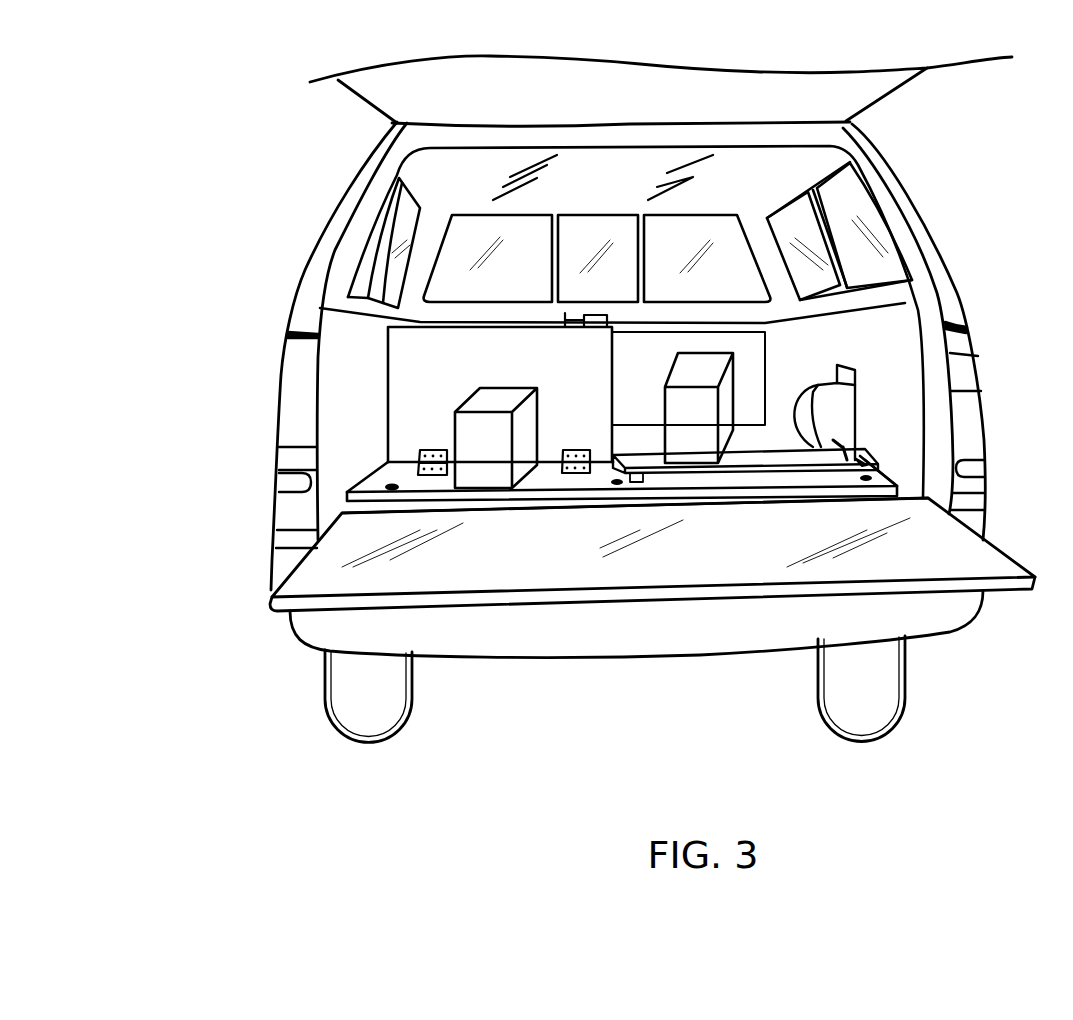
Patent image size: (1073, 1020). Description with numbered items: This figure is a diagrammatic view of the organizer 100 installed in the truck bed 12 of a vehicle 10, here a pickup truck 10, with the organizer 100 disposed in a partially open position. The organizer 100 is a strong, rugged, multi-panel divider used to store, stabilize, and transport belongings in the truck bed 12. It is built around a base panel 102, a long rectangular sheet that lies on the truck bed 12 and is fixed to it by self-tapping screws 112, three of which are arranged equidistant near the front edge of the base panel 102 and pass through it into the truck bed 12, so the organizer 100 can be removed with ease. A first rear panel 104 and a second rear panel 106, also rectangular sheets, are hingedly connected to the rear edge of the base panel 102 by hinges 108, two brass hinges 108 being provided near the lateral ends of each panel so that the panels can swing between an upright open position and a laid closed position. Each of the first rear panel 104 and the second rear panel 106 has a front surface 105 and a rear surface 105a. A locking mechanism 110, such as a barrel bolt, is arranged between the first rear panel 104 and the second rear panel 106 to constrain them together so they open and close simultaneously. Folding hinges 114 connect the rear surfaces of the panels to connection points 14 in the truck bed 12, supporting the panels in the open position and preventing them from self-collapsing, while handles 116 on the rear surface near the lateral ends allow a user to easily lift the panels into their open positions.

The pickup truck 10 is at (923, 236).
The truck bed 12 is at (893, 370).
The connection points 14 is at (843, 440).
The organizer 100 is at (770, 423).
The base panel 102 is at (520, 497).
The first rear panel 104 is at (387, 393).
The front surface 105 is at (467, 355).
The rear surface 105a is at (690, 567).
The second rear panel 106 is at (752, 458).
The hinges 108 is at (417, 460).
The locking mechanism 110 is at (563, 323).
The self-tapping screws 112 is at (390, 492).
The folding hinges 114 is at (857, 460).
The handles 116 is at (862, 464).